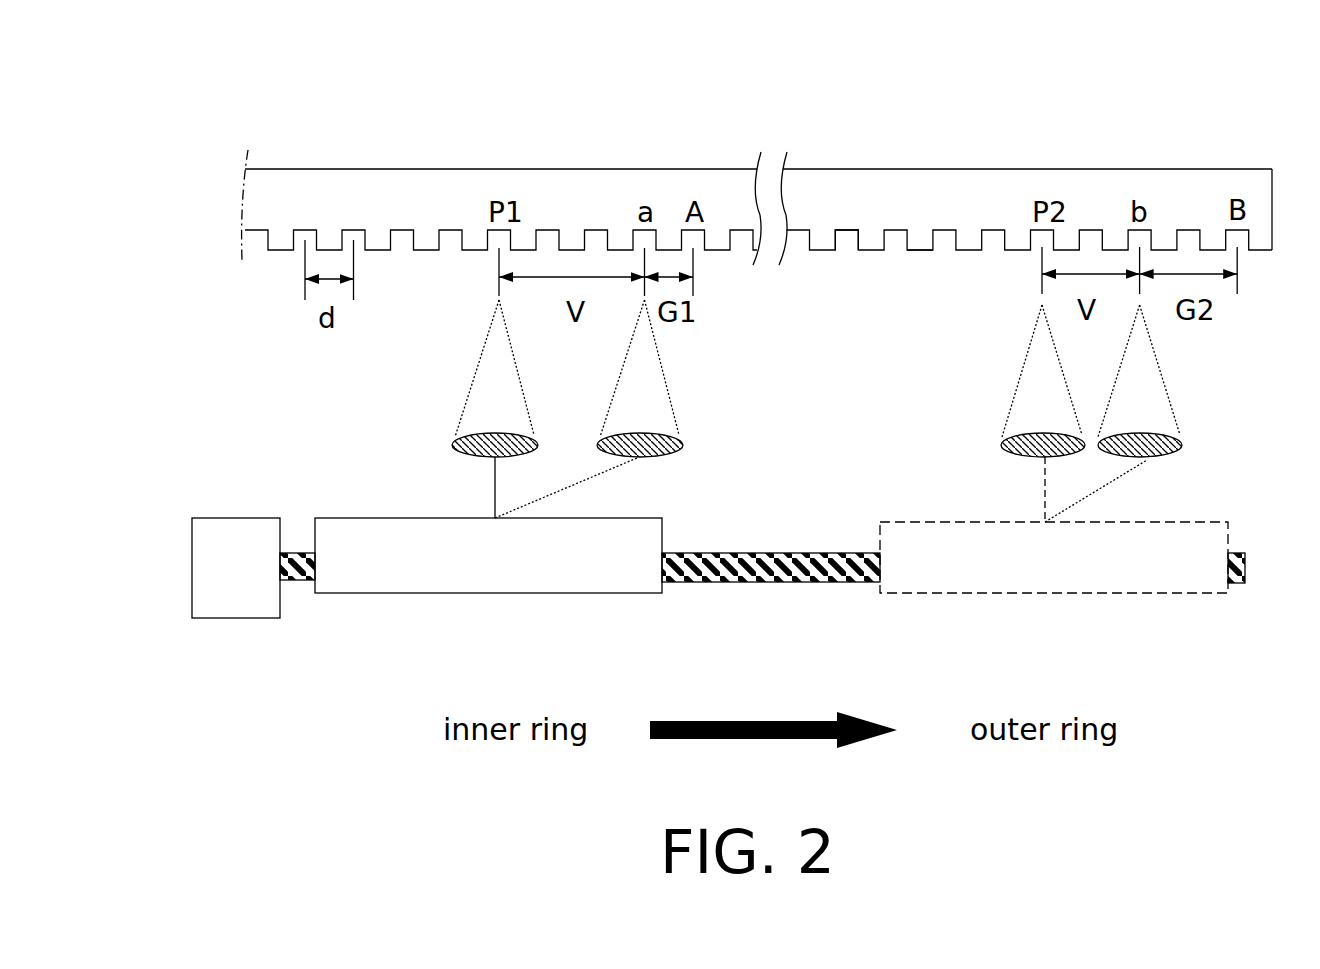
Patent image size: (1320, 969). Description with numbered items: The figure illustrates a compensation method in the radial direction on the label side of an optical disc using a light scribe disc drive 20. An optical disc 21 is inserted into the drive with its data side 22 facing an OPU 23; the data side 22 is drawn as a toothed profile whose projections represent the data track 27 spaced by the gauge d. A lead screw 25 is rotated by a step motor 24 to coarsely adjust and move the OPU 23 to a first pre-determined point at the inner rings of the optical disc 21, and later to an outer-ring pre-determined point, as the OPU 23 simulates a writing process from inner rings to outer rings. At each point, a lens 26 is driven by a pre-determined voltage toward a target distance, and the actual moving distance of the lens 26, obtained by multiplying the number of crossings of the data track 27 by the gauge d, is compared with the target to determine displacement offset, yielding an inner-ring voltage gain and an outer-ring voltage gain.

The light scribe disc drive 20 is at (325, 58).
The optical disc 21 is at (946, 169).
The data side 22 is at (920, 252).
The data track 27 is at (847, 235).
The OPU 23 is at (373, 593).
The step motor 24 is at (232, 618).
The lead screw 25 is at (836, 553).
The lens 26 is at (452, 441).